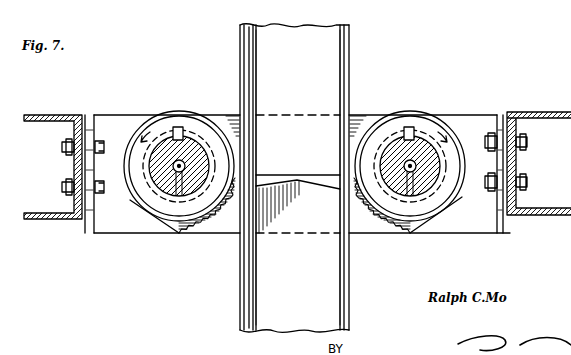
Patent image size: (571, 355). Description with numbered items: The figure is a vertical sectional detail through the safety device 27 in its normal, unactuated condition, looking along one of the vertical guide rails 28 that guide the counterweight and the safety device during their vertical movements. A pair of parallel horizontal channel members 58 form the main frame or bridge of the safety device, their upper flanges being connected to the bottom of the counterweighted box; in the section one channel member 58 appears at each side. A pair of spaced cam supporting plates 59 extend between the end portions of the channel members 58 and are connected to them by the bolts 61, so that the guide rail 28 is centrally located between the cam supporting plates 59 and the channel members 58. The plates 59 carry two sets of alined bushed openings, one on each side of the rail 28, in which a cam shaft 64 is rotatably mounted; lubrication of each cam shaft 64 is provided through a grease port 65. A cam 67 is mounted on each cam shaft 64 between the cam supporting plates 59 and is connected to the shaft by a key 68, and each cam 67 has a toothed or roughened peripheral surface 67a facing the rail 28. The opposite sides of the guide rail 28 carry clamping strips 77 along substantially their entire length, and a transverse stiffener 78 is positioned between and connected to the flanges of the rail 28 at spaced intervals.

The safety device 27 is at (476, 119).
The vertical guide rail 28 is at (325, 75).
The horizontal channel member 58 is at (38, 122).
The cam supporting plate 59 is at (139, 234).
The bolts 61 is at (62, 186).
The cam shaft 64 is at (187, 140).
The grease port 65 is at (146, 198).
The cam 67 is at (178, 235).
The toothed peripheral surface 67a is at (218, 235).
The key 68 is at (178, 127).
The clamping strip 77 is at (350, 42).
The transverse stiffener 78 is at (320, 185).